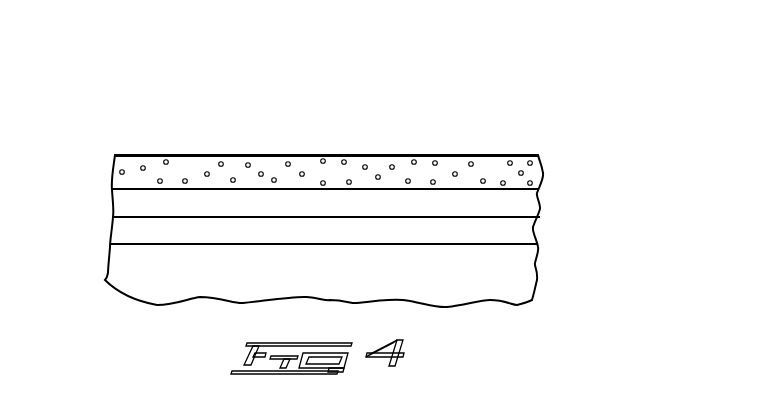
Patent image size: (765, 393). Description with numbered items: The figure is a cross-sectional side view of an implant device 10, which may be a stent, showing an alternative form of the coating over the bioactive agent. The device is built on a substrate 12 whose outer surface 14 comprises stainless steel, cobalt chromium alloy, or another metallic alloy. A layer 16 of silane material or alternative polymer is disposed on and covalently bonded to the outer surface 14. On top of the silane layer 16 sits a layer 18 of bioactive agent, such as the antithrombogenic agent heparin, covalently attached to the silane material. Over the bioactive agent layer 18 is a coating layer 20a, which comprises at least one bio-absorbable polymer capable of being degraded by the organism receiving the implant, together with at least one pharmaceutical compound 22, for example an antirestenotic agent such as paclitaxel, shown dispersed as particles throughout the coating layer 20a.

The implant device 10 is at (345, 160).
The substrate 12 is at (511, 283).
The outer surface 14 is at (505, 243).
The layer of silane material 16 is at (140, 232).
The layer of bioactive agent 18 is at (143, 202).
The coating layer 20a is at (325, 130).
The pharmaceutical compound 22 is at (378, 175).